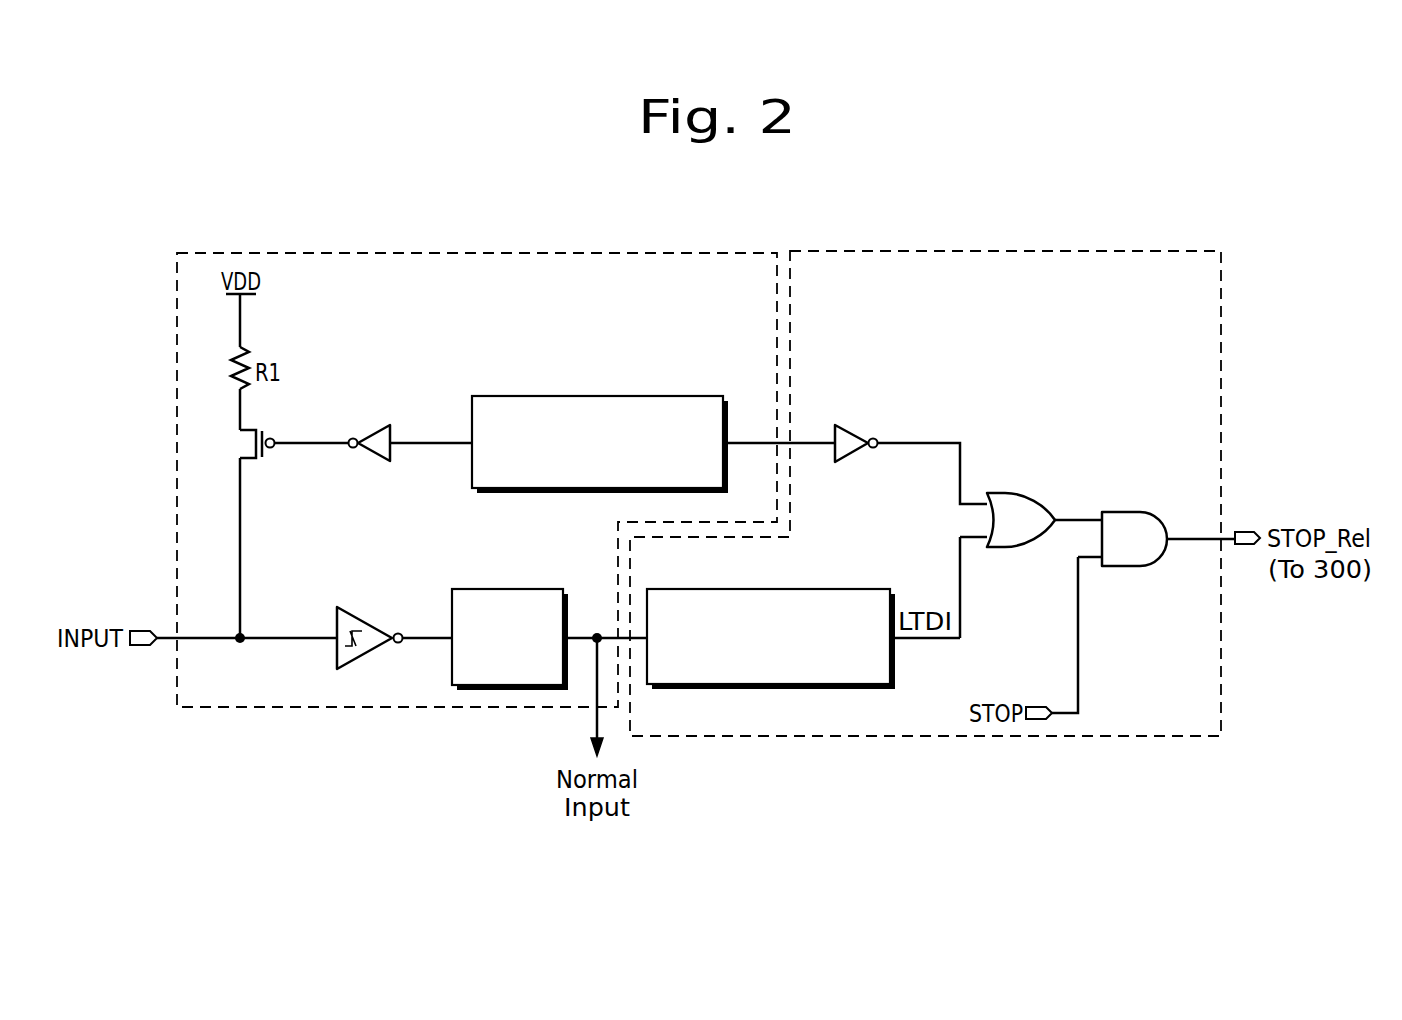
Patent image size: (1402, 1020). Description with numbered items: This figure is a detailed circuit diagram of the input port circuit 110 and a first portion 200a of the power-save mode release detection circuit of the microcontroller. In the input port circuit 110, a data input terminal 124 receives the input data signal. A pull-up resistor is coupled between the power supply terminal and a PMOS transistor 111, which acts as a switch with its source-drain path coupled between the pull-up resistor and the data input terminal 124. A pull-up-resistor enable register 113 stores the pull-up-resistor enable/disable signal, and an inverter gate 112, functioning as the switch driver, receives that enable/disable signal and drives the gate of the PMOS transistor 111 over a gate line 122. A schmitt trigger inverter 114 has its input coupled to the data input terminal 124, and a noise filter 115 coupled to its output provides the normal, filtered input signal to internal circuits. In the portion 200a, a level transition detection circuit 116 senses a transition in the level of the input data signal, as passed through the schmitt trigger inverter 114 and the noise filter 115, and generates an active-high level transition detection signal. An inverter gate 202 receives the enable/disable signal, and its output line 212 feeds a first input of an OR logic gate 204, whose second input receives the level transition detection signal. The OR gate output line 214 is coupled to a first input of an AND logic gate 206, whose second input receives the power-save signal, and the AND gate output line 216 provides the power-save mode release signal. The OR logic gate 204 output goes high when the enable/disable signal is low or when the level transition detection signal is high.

The input port circuit 110 is at (519, 253).
The portion of the power-save mode release detection circuit 200a is at (1066, 251).
The PMOS transistor 111 is at (246, 443).
The inverter gate 112 is at (371, 436).
The pull-up-resistor enable register 113 is at (696, 396).
The schmitt trigger inverter 114 is at (365, 617).
The noise filter 115 is at (536, 589).
The level transition detection circuit 116 is at (855, 589).
The pull-up enable signal line 122 is at (313, 443).
The data input terminal 124 is at (243, 637).
The inverter gate 202 is at (853, 430).
The OR logic gate 204 is at (1005, 493).
The AND logic gate 206 is at (1123, 512).
The inverted PRE signal line 212 is at (928, 443).
The OR gate output line 214 is at (1077, 519).
The STOP release output line 216 is at (1180, 538).